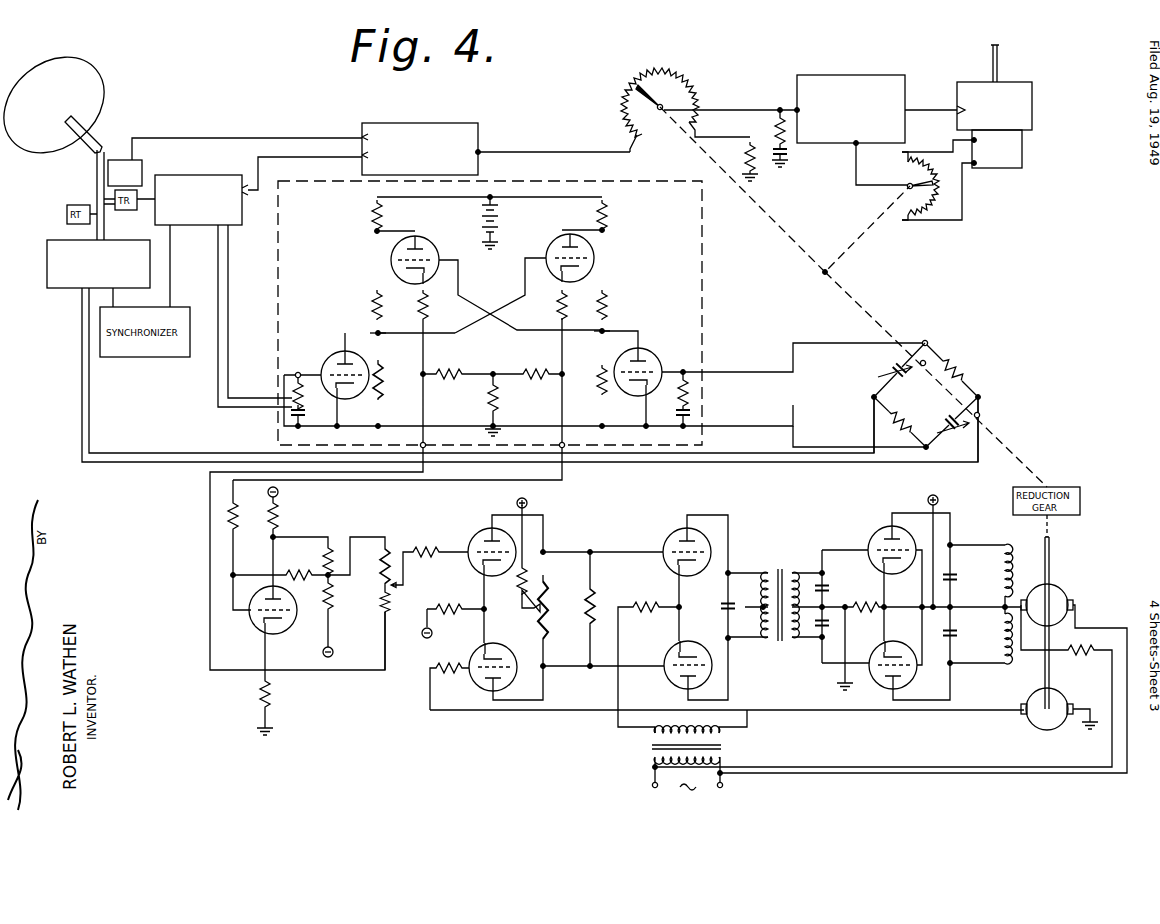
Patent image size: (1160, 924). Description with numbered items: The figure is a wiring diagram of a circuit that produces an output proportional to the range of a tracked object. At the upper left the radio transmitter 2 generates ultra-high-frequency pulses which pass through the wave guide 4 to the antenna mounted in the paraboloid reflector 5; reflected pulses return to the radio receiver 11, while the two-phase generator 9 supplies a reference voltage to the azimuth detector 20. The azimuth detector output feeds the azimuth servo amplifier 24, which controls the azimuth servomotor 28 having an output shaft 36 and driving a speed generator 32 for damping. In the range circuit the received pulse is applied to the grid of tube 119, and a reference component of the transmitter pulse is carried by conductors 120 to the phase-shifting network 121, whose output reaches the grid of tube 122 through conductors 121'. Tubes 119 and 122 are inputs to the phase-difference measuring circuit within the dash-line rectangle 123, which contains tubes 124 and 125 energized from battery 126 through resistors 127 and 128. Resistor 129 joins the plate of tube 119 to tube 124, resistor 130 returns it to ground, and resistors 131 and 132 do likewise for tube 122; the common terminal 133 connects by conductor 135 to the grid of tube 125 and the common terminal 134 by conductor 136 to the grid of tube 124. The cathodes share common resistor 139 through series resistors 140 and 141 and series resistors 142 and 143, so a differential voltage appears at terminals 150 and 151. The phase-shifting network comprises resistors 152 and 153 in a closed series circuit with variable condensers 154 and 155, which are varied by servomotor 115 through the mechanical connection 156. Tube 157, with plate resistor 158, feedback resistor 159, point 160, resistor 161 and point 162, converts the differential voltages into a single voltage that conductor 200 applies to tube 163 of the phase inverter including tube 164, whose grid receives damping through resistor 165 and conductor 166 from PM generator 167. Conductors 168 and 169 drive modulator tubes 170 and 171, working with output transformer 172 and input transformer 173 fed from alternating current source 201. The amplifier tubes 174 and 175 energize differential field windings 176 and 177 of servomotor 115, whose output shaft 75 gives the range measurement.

The radio transmitter 2 is at (47, 282).
The wave guide 4 is at (80, 130).
The paraboloid reflector 5 is at (96, 75).
The two-phase generator 9 is at (142, 162).
The radio receiver 11 is at (211, 174).
The azimuth detector 20 is at (440, 122).
The azimuth servo amplifier 24 is at (858, 73).
The azimuth servomotor 28 is at (1032, 84).
The speed generator 32 is at (1022, 163).
The output shaft 36 is at (997, 52).
The output shaft 75 is at (1053, 562).
The servomotor 115 is at (1065, 588).
The tube 119 is at (320, 348).
The conductors 120 is at (82, 416).
The phase-shifting network 121 is at (908, 409).
The conductors 121' is at (804, 369).
The tube 122 is at (656, 343).
The rectangle 123 is at (702, 262).
The tube 124 is at (431, 238).
The tube 125 is at (548, 245).
The battery 126 is at (505, 208).
The resistor 127 is at (372, 223).
The resistor 128 is at (611, 213).
The resistor 129 is at (372, 292).
The resistor 130 is at (383, 372).
The resistor 131 is at (612, 302).
The resistor 132 is at (597, 380).
The common terminal 133 is at (376, 332).
The common terminal 134 is at (612, 331).
The conductor 135 is at (462, 338).
The conductor 136 is at (512, 328).
The common resistor 139 is at (503, 396).
The resistor 140 is at (447, 384).
The resistor 141 is at (430, 302).
The resistor 142 is at (536, 362).
The resistor 143 is at (568, 302).
The terminal 150 is at (428, 443).
The terminal 151 is at (567, 443).
The resistor 152 is at (905, 417).
The resistor 153 is at (952, 363).
The variable condenser 154 is at (958, 434).
The variable condenser 155 is at (874, 360).
The mechanical connection 156 is at (1020, 475).
The tube 157 is at (278, 636).
The resistor 158 is at (330, 542).
The resistor 159 is at (306, 558).
The point 160 is at (333, 592).
The resistor 161 is at (390, 558).
The point 162 is at (396, 598).
The tube 163 is at (468, 532).
The tube 164 is at (462, 682).
The resistor 165 is at (430, 690).
The conductor 166 is at (803, 726).
The PM generator 167 is at (1065, 696).
The conductor 168 is at (574, 558).
The conductor 169 is at (578, 664).
The tube 170 is at (665, 524).
The tube 171 is at (662, 688).
The output transformer 172 is at (782, 560).
The input transformer 173 is at (652, 753).
The tube 174 is at (872, 525).
The tube 175 is at (870, 685).
The differential field winding 176 is at (1003, 580).
The differential field winding 177 is at (1000, 644).
The conductor 200 is at (407, 562).
The source of alternating current 201 is at (648, 768).